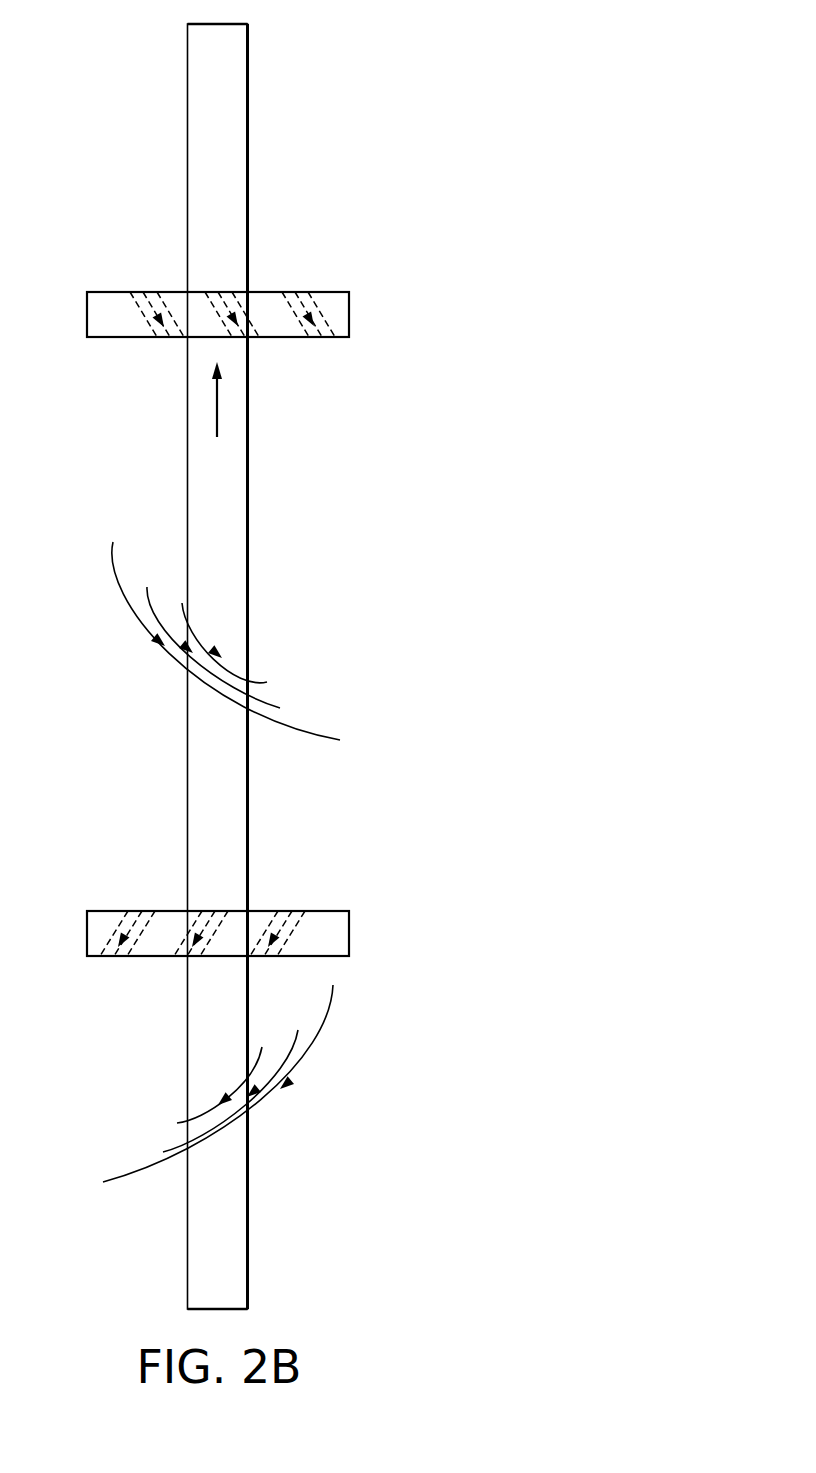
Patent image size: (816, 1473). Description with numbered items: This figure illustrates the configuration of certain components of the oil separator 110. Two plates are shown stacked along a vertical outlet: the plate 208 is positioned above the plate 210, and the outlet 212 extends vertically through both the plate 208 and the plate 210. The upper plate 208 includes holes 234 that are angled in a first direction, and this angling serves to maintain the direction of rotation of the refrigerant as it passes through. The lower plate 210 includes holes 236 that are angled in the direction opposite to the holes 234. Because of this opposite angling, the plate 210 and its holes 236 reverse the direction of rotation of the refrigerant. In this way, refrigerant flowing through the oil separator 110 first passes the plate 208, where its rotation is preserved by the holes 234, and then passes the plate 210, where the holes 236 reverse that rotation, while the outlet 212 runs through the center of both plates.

The oil separator 110 is at (327, 42).
The plate 208 is at (349, 309).
The plate 210 is at (349, 927).
The outlet 212 is at (248, 553).
The holes 234 is at (303, 292).
The holes 236 is at (132, 907).